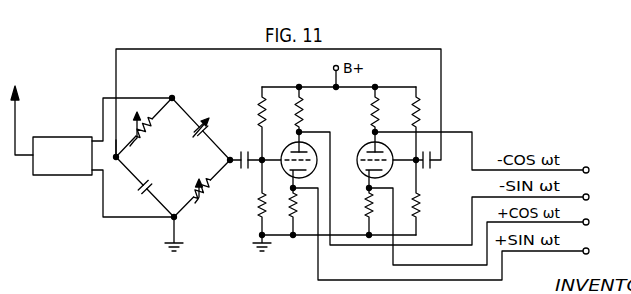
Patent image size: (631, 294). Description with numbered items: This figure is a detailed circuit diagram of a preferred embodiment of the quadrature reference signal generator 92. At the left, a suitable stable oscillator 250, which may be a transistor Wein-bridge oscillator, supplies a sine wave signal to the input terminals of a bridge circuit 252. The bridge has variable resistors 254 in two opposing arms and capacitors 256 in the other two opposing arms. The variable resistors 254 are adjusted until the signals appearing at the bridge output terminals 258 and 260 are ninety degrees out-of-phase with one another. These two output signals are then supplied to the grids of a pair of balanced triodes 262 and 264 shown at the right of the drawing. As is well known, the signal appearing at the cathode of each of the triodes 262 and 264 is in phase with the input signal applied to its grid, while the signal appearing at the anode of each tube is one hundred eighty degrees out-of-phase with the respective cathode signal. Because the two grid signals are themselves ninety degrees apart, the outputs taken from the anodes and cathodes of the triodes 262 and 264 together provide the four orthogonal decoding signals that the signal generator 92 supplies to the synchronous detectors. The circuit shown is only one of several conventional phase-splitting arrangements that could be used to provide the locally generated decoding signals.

The signal generator 92 is at (83, 66).
The oscillator 250 is at (83, 137).
The bridge circuit 252 is at (188, 84).
The variable resistors 254 is at (143, 133).
The capacitors 256 is at (201, 123).
The output terminal 258 is at (117, 161).
The output terminal 260 is at (233, 152).
The triode 262 is at (287, 138).
The triode 264 is at (357, 145).